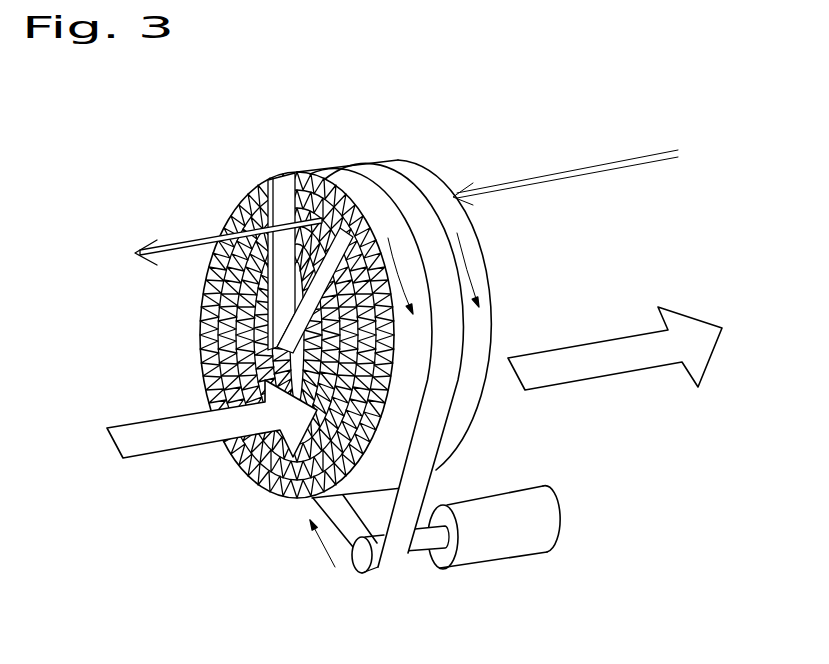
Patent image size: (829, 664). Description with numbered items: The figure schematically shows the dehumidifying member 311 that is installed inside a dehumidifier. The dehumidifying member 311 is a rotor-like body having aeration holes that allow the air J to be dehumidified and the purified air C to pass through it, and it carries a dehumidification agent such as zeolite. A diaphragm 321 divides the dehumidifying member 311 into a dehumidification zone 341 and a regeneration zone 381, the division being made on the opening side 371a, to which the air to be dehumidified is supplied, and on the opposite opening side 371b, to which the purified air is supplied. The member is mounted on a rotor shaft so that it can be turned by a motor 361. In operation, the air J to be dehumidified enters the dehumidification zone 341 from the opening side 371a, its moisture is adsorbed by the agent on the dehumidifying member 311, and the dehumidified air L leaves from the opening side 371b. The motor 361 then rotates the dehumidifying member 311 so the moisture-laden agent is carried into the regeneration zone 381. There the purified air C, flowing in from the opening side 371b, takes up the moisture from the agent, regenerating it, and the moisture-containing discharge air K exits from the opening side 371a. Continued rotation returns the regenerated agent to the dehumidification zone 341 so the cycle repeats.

The dehumidifying member 311 is at (415, 167).
The diaphragm 321 is at (364, 168).
The dehumidification zone 341 is at (243, 465).
The regeneration zone 381 is at (325, 167).
The opening side 371a is at (280, 497).
The opening side 371b is at (477, 437).
The motor 361 is at (507, 535).
The air to be dehumidified J is at (196, 422).
The discharge air K is at (217, 244).
The dehumidified air L is at (625, 348).
The purified air C is at (575, 170).